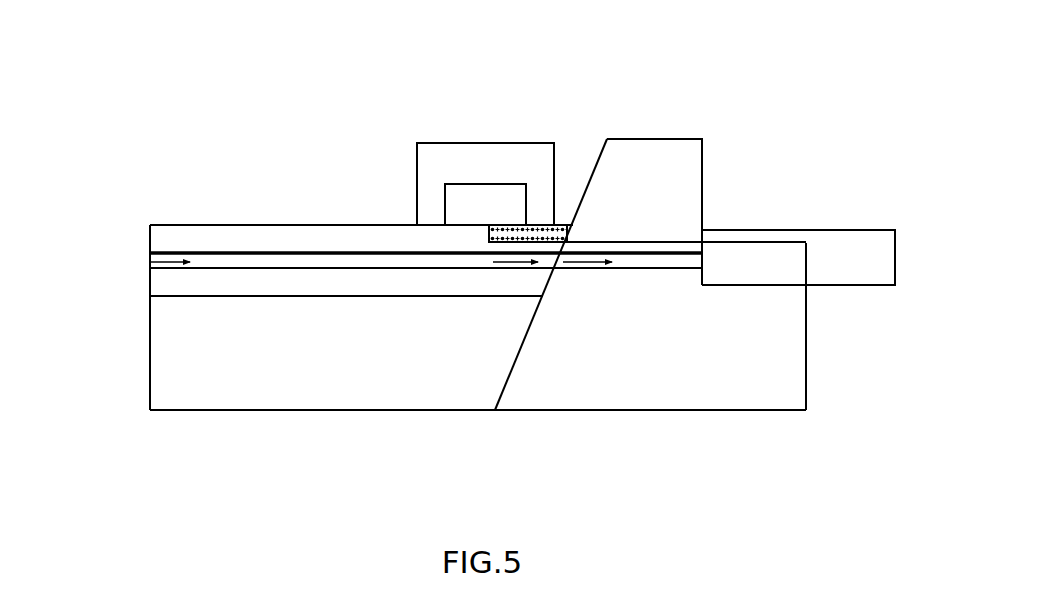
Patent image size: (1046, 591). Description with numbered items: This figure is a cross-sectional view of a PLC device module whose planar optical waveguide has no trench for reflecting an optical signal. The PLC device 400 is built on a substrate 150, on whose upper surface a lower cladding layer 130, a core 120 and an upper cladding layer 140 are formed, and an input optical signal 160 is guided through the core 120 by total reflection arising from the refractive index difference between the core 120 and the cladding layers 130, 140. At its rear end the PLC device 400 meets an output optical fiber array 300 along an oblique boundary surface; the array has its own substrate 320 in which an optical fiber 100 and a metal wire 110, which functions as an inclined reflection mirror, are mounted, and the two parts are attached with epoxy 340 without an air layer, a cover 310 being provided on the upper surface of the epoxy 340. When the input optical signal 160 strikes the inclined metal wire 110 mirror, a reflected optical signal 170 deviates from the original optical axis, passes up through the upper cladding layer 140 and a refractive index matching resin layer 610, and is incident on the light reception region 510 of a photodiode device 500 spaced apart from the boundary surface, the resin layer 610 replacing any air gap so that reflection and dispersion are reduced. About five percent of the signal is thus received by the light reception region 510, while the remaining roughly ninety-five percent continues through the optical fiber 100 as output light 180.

The optical fiber 100 is at (855, 230).
The metal wire 110 is at (668, 263).
The core 120 is at (367, 262).
The lower cladding layer 130 is at (260, 288).
The upper cladding layer 140 is at (200, 240).
The substrate 150 is at (312, 380).
The input optical signal 160 is at (145, 262).
The reflected optical signal 170 is at (543, 253).
The output light 180 is at (582, 262).
The output optical fiber array 300 is at (770, 410).
The cover 310 is at (677, 150).
The substrate 320 is at (662, 395).
The epoxy 340 is at (753, 134).
The PLC device 400 is at (438, 410).
The photodiode device 500 is at (426, 157).
The light reception region 510 is at (489, 184).
The refractive index matching resin layer 610 is at (565, 232).